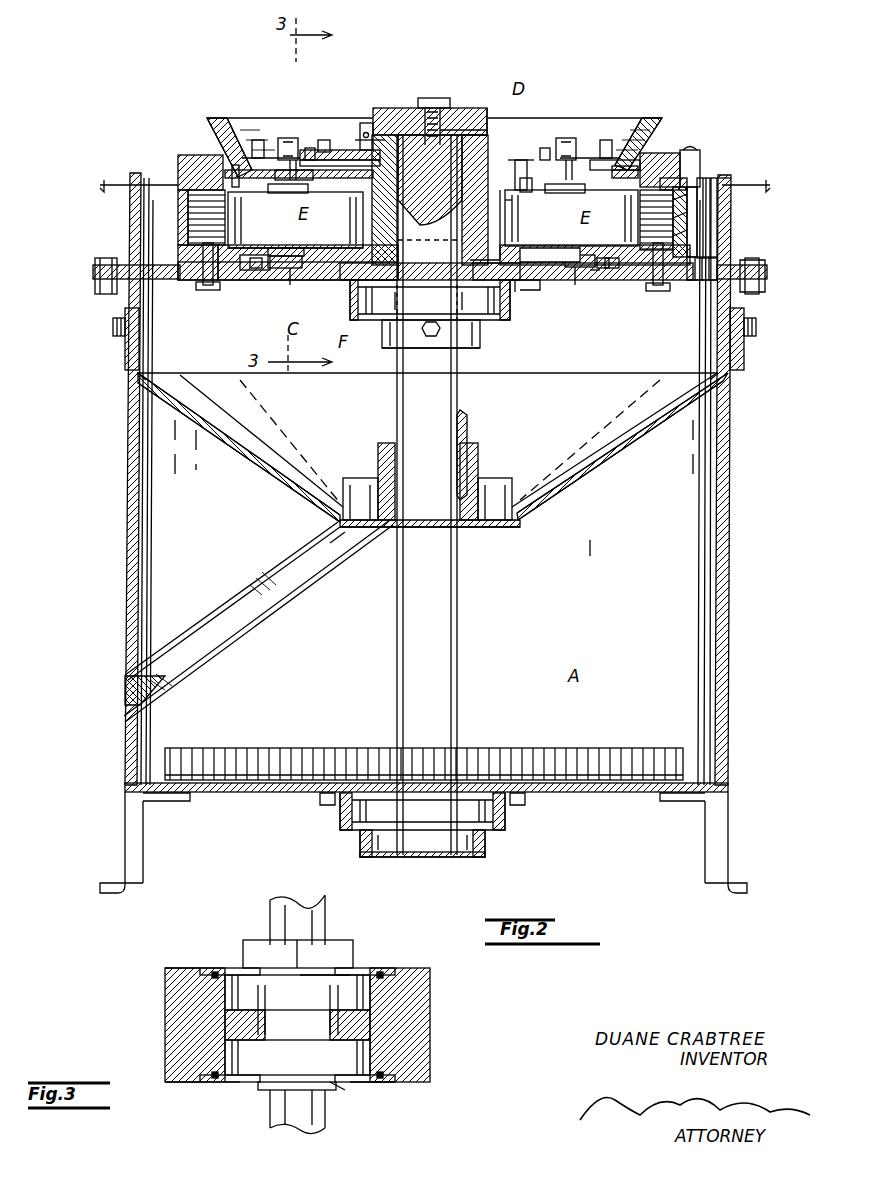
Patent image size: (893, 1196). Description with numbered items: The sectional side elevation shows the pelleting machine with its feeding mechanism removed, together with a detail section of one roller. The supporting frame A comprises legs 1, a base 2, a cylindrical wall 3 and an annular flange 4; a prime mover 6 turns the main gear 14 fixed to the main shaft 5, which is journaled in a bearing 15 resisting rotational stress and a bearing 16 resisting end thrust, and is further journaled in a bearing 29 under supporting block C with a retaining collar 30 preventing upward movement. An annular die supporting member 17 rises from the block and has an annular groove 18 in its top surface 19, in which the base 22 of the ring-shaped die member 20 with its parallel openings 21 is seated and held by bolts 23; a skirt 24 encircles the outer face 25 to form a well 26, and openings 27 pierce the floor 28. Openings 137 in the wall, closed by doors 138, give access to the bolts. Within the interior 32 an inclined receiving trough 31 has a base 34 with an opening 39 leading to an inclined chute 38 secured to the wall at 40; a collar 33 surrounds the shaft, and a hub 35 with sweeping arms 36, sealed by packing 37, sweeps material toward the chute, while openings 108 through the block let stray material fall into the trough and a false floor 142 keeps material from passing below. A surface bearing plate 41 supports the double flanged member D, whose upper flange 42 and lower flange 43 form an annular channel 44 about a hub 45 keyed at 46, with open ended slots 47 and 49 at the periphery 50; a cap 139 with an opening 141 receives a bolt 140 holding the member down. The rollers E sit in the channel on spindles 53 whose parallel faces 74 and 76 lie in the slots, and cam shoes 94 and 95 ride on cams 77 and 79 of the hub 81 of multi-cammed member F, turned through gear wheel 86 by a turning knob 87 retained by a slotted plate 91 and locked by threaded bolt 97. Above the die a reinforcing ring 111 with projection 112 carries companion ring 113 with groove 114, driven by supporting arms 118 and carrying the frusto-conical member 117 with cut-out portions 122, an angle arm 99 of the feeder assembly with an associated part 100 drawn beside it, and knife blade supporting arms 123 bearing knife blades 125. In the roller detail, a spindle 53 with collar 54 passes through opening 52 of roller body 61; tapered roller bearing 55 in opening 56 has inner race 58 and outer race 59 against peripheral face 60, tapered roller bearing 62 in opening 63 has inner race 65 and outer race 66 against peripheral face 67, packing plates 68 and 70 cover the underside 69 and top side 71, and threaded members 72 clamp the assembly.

In FIG. 2, the legs 1 is at (143, 858).
In FIG. 2, the base 2 is at (260, 786).
In FIG. 2, the cylindrical wall 3 is at (140, 575).
In FIG. 2, the annular flange 4 is at (765, 282).
In FIG. 2, the main shaft 5 is at (452, 650).
In FIG. 2, the prime mover 6 is at (436, 175).
In FIG. 2, the main gear 14 is at (503, 760).
In FIG. 2, the bearing 15 is at (505, 815).
In FIG. 2, the bearing 16 is at (485, 848).
In FIG. 2, the annular die supporting member 17 is at (185, 265).
In FIG. 2, the annular groove 18 is at (192, 280).
In FIG. 2, the top surface 19 is at (188, 238).
In FIG. 2, the ring-shaped die member 20 is at (188, 215).
In FIG. 2, the parallel openings 21 is at (225, 215).
In FIG. 2, the base 22 is at (232, 280).
In FIG. 2, the bolts 23 is at (208, 292).
In FIG. 2, the skirt 24 is at (733, 222).
In FIG. 2, the outer face 25 is at (694, 196).
In FIG. 2, the circumferential well 26 is at (710, 204).
In FIG. 2, the openings 27 is at (125, 272).
In FIG. 2, the floor 28 is at (702, 266).
In FIG. 2, the bearing 29 is at (485, 328).
In FIG. 2, the retaining collar 30 is at (478, 348).
In FIG. 2, the inclined receiving trough 31 is at (575, 477).
In FIG. 2, the interior 32 is at (589, 561).
In FIG. 2, the collar 33 is at (395, 505).
In FIG. 2, the base 34 is at (485, 528).
In FIG. 2, the hub 35 is at (468, 460).
In FIG. 2, the sweeping arms 36 is at (352, 478).
In FIG. 2, the packing 37 is at (378, 490).
In FIG. 2, the inclined chute 38 is at (262, 622).
In FIG. 2, the opening 39 is at (345, 530).
In FIG. 2, the chute connection 40 is at (137, 672).
In FIG. 2, the surface bearing plate 41 is at (430, 291).
In FIG. 2, the upper flange 42 is at (522, 160).
In FIG. 2, the lower flange 43 is at (515, 290).
In FIG. 2, the annular channel 44 is at (325, 150).
In FIG. 2, the hub 45 is at (440, 225).
In FIG. 2, the key 46 is at (398, 108).
In FIG. 2, the open ended slots 47 is at (258, 140).
In FIG. 2, the open ended slots 49 is at (256, 268).
In FIG. 2, the periphery 50 is at (612, 268).
In FIG. 2, the spindle 53 is at (285, 138).
In FIG. 3, the spindle 53 is at (325, 915).
In FIG. 2, the parallel face 74 is at (292, 138).
In FIG. 2, the parallel face 76 is at (275, 268).
In FIG. 2, the cam 77 is at (326, 140).
In FIG. 2, the cam 79 is at (500, 190).
In FIG. 2, the hub 81 is at (506, 218).
In FIG. 2, the gear wheel 86 is at (370, 123).
In FIG. 2, the turning knob 87 is at (368, 123).
In FIG. 2, the slotted plate 91 is at (350, 160).
In FIG. 2, the cam shoe 94 is at (283, 193).
In FIG. 2, the cam shoe 95 is at (290, 285).
In FIG. 2, the threaded bolt 97 is at (533, 193).
In FIG. 2, the angle arm 99 is at (290, 170).
In FIG. 2, the pin 100 is at (233, 165).
In FIG. 2, the openings 108 is at (592, 280).
In FIG. 2, the annular flanged reinforcing ring 111 is at (693, 150).
In FIG. 2, the annular projection 112 is at (672, 178).
In FIG. 2, the companion annular ring 113 is at (660, 153).
In FIG. 2, the annular groove 114 is at (195, 155).
In FIG. 2, the inverted frusto-conical member 117 is at (600, 160).
In FIG. 2, the supporting arms 118 is at (310, 148).
In FIG. 2, the cut-out portions 122 is at (632, 170).
In FIG. 2, the knife blade supporting arms 123 is at (697, 148).
In FIG. 2, the knife blade 125 is at (684, 200).
In FIG. 2, the openings 137 is at (137, 378).
In FIG. 2, the doors 138 is at (125, 350).
In FIG. 2, the cap 139 is at (478, 108).
In FIG. 2, the bolt 140 is at (436, 98).
In FIG. 2, the opening 141 is at (462, 112).
In FIG. 2, the false floor 142 is at (280, 242).
In FIG. 3, the opening 52 is at (430, 1003).
In FIG. 3, the collar 54 is at (297, 1112).
In FIG. 3, the tapered roller bearing 55 is at (345, 990).
In FIG. 3, the opening 56 is at (430, 978).
In FIG. 3, the inner race 58 is at (335, 972).
In FIG. 3, the outer race 59 is at (245, 985).
In FIG. 3, the peripheral face 60 is at (212, 1002).
In FIG. 3, the roller body 61 is at (175, 1045).
In FIG. 3, the tapered roller bearing 62 is at (262, 1090).
In FIG. 3, the opening 63 is at (238, 1084).
In FIG. 3, the inner race 65 is at (340, 1085).
In FIG. 3, the outer race 66 is at (370, 1085).
In FIG. 3, the peripheral face 67 is at (430, 1058).
In FIG. 3, the packing plate 68 is at (215, 1082).
In FIG. 3, the underside 69 is at (170, 1082).
In FIG. 3, the packing plate 70 is at (215, 968).
In FIG. 3, the top side 71 is at (170, 968).
In FIG. 3, the threaded members 72 is at (265, 955).